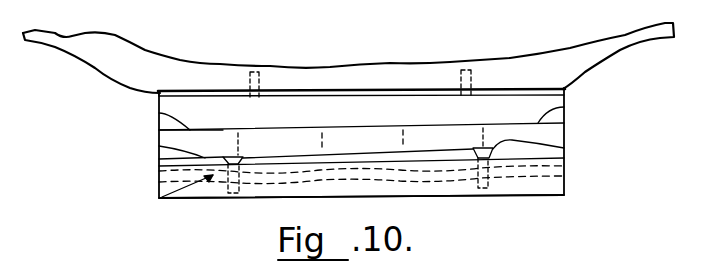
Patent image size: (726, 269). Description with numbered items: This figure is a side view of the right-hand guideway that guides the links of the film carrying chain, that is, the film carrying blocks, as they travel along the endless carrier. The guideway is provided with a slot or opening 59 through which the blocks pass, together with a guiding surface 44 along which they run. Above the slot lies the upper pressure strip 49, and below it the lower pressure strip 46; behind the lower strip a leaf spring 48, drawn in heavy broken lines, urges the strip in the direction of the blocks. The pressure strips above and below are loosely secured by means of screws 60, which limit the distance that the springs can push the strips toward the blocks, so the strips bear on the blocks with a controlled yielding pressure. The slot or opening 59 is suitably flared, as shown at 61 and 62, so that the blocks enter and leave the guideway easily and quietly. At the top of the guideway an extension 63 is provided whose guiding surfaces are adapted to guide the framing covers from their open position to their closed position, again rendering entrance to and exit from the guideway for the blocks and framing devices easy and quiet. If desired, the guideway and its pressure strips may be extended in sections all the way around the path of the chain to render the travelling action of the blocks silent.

The guiding surface 44 is at (172, 147).
The lower pressure strip 46 is at (425, 156).
The leaf spring 48 is at (159, 197).
The upper pressure strip 49 is at (342, 88).
The slot or opening 59 is at (273, 140).
The screws 60 is at (255, 72).
The flare of the slot 61 is at (159, 113).
The flare of the slot 62 is at (159, 151).
The extension 63 is at (113, 82).